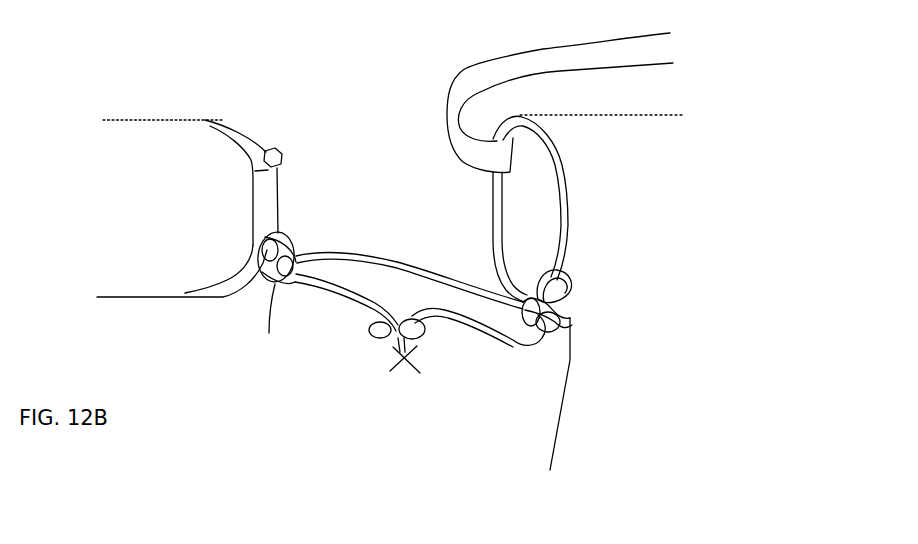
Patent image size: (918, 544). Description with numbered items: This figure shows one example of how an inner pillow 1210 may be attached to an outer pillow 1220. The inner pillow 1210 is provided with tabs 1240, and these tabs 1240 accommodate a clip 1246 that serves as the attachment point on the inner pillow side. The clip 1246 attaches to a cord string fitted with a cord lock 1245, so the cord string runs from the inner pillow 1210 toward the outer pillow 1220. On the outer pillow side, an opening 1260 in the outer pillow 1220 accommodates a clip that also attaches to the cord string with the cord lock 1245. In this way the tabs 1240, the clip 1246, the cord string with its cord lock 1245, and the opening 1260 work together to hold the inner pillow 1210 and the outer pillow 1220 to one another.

The inner pillow 1210 is at (158, 142).
The outer pillow 1220 is at (527, 306).
The tabs 1240 is at (281, 225).
The cord lock 1245 is at (498, 341).
The clip 1246 is at (416, 399).
The opening 1260 is at (571, 287).